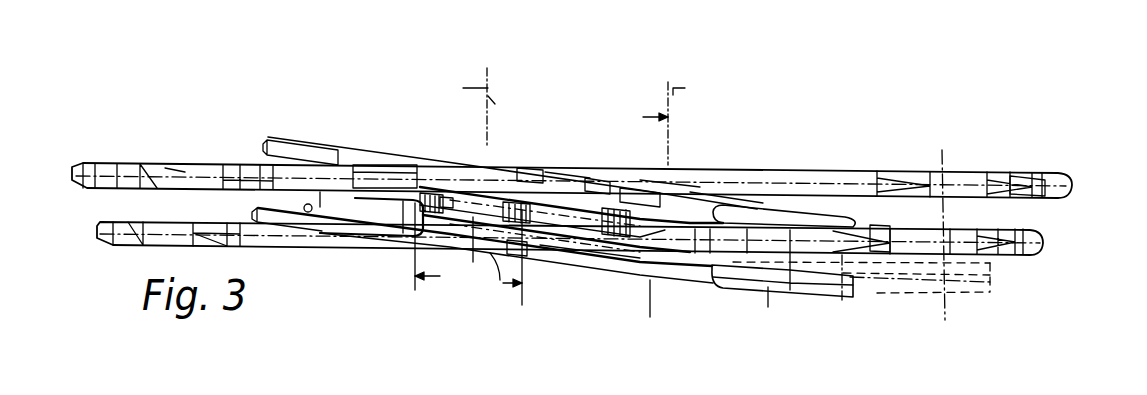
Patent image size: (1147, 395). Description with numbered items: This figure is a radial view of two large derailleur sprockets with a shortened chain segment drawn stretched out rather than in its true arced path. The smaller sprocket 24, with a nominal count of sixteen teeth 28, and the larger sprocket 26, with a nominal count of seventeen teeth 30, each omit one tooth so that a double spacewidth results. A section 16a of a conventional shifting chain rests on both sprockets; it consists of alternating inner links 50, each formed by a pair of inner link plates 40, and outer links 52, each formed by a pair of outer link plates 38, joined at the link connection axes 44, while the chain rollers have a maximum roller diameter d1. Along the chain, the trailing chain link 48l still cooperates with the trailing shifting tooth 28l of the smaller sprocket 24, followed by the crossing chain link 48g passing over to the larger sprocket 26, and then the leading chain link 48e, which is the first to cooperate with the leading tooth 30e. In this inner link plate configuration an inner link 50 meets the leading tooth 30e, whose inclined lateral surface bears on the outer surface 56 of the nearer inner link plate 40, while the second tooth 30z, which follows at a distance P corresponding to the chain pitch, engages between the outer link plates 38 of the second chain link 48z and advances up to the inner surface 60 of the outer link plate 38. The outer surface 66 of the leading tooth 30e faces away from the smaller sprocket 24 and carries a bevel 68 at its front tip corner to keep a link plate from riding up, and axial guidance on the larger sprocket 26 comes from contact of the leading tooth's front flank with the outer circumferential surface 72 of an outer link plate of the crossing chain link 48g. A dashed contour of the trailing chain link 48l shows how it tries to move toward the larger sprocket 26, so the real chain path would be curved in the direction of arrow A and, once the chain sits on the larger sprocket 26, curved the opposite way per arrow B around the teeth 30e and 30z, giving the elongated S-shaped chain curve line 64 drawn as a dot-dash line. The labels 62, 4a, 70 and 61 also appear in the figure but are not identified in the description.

The larger sprocket 26 is at (1053, 173).
The smaller sprocket 24 is at (1040, 223).
The teeth of the larger sprocket 30 is at (1020, 177).
The teeth of the smaller sprocket 28 is at (985, 227).
The trailing shifting tooth 28l is at (878, 235).
The chain curve line 64 is at (177, 170).
The outer link plates 38 is at (300, 139).
The inner surface of the outer link plate 60 is at (343, 163).
The second tooth 30z is at (368, 201).
The coupling block 62 is at (420, 175).
The link connection axes 44 is at (581, 116).
The inner link plates 40 is at (540, 183).
The outer surface of the inner link plate 56 is at (537, 168).
The outer surface of the leading tooth 66 is at (540, 170).
The bevel 68 is at (593, 172).
The leading tooth 30e is at (618, 172).
The inner links 50 is at (627, 170).
The outer circumferential surface of an outer link plate 72 is at (622, 45).
The outer links 52 is at (767, 205).
The crossing chain link 48g is at (740, 289).
The guide 4a is at (787, 262).
The rod 70 is at (853, 272).
The trailing chain link 48l is at (863, 294).
The leading chain link 48e is at (570, 258).
The second chain link 48z is at (318, 232).
The section of shifting chain 16a is at (507, 243).
The pivot 61 is at (312, 200).
The roller diameter d1 is at (467, 310).
The arrow A is at (968, 294).
The arrow B is at (252, 108).
The chain pitch distance P is at (569, 116).